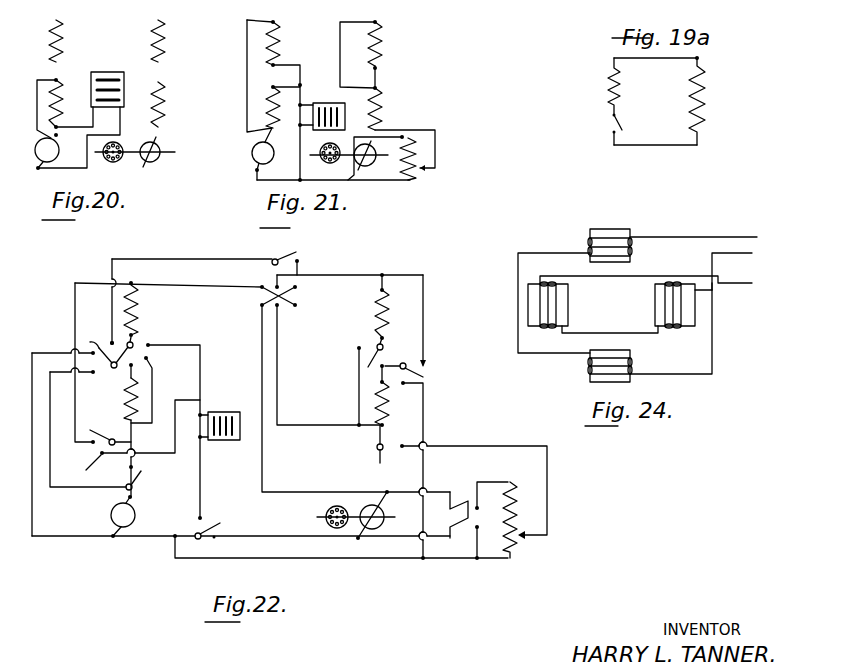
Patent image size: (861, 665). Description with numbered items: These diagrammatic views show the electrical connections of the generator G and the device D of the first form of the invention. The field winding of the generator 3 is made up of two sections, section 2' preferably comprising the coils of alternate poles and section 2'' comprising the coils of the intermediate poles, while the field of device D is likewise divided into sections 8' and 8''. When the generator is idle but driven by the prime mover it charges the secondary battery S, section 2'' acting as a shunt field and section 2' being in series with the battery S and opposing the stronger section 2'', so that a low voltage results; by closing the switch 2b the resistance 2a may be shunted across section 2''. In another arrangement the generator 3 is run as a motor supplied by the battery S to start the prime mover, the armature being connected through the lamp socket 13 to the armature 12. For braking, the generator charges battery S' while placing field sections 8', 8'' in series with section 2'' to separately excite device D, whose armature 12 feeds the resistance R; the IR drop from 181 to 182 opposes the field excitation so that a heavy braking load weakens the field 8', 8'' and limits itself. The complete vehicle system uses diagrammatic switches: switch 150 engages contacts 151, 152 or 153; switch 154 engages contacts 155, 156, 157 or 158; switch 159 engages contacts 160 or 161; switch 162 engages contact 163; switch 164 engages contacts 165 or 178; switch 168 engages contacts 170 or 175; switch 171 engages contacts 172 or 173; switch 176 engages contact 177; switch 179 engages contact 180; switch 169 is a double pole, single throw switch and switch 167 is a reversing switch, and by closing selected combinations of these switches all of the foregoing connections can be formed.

In FIG. 20, the field winding section 2' is at (64, 41).
In FIG. 21, the field winding section 2' is at (281, 43).
In FIG. 24, the field winding section 2' is at (693, 233).
In FIG. 22, the field winding section 2' is at (139, 311).
In FIG. 20, the field winding section 2'' is at (65, 103).
In FIG. 21, the field winding section 2'' is at (281, 106).
In FIG. 19a, the field winding section 2'' is at (709, 101).
In FIG. 24, the field winding section 2'' is at (729, 279).
In FIG. 22, the field winding section 2'' is at (140, 399).
In FIG. 19a, the resistance 2a is at (607, 82).
In FIG. 19a, the switch 2b is at (611, 123).
In FIG. 20, the field section 8' is at (149, 41).
In FIG. 21, the field section 8' is at (366, 44).
In FIG. 22, the field section 8' is at (390, 313).
In FIG. 20, the field section 8'' is at (149, 104).
In FIG. 21, the field section 8'' is at (366, 109).
In FIG. 22, the field section 8'' is at (391, 403).
In FIG. 20, the generator 3 is at (47, 153).
In FIG. 21, the generator 3 is at (263, 161).
In FIG. 22, the generator 3 is at (123, 516).
In FIG. 20, the armature 12 is at (150, 152).
In FIG. 21, the armature 12 is at (365, 155).
In FIG. 22, the armature 12 is at (372, 515).
In FIG. 20, the lamp socket 13 is at (119, 144).
In FIG. 21, the lamp socket 13 is at (336, 145).
In FIG. 22, the lamp socket 13 is at (343, 508).
In FIG. 20, the secondary battery S is at (107, 96).
In FIG. 22, the secondary battery S is at (219, 435).
In FIG. 21, the storage battery S' is at (329, 123).
In FIG. 21, the resistance R is at (401, 159).
In FIG. 22, the resistance R is at (516, 520).
In FIG. 22, the switch 150 is at (133, 342).
In FIG. 22, the contact 151 is at (152, 344).
In FIG. 22, the contact 152 is at (154, 389).
In FIG. 22, the contact 153 is at (133, 373).
In FIG. 22, the switch 154 is at (116, 357).
In FIG. 22, the contact 155 is at (102, 332).
In FIG. 22, the contact 156 is at (87, 339).
In FIG. 22, the contact 157 is at (65, 359).
In FIG. 22, the contact 158 is at (74, 377).
In FIG. 22, the switch 159 is at (110, 431).
In FIG. 22, the contact 160 is at (91, 444).
In FIG. 22, the contact 161 is at (133, 439).
In FIG. 22, the switch 162 is at (133, 488).
In FIG. 22, the contact 163 is at (129, 468).
In FIG. 22, the switch 164 is at (193, 528).
In FIG. 22, the contact 165 is at (216, 536).
In FIG. 22, the reversing switch 167 is at (289, 297).
In FIG. 22, the switch 168 is at (383, 345).
In FIG. 22, the double pole single throw switch 169 is at (461, 499).
In FIG. 22, the contact 170 is at (349, 384).
In FIG. 22, the switch 171 is at (401, 360).
In FIG. 22, the contact 172 is at (425, 366).
In FIG. 22, the contact 173 is at (401, 386).
In FIG. 22, the contact 175 is at (373, 373).
In FIG. 22, the switch 176 is at (367, 444).
In FIG. 22, the contact 177 is at (401, 448).
In FIG. 22, the contact 178 is at (202, 517).
In FIG. 22, the switch 179 is at (284, 251).
In FIG. 22, the contact 180 is at (299, 261).
In FIG. 21, the point on resistance R 181 is at (424, 172).
In FIG. 21, the point on resistance R 182 is at (402, 182).